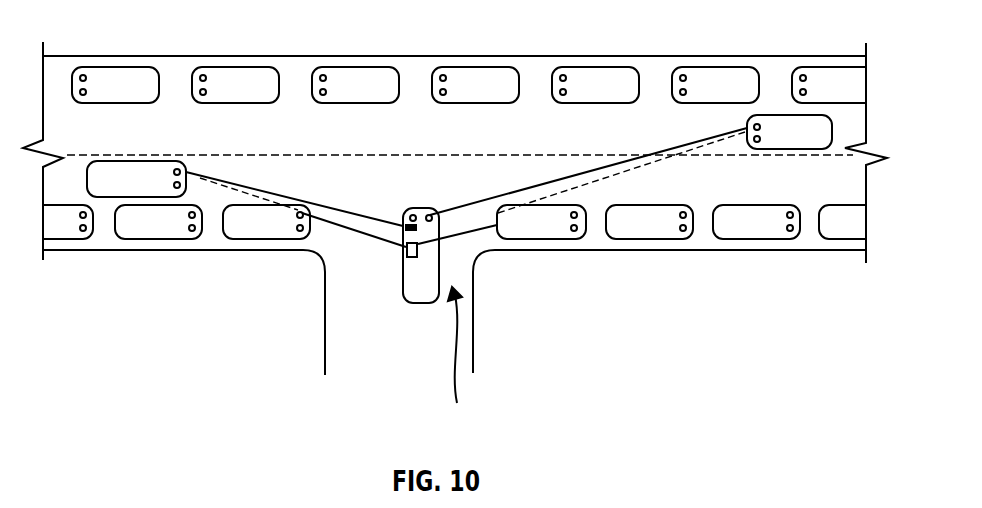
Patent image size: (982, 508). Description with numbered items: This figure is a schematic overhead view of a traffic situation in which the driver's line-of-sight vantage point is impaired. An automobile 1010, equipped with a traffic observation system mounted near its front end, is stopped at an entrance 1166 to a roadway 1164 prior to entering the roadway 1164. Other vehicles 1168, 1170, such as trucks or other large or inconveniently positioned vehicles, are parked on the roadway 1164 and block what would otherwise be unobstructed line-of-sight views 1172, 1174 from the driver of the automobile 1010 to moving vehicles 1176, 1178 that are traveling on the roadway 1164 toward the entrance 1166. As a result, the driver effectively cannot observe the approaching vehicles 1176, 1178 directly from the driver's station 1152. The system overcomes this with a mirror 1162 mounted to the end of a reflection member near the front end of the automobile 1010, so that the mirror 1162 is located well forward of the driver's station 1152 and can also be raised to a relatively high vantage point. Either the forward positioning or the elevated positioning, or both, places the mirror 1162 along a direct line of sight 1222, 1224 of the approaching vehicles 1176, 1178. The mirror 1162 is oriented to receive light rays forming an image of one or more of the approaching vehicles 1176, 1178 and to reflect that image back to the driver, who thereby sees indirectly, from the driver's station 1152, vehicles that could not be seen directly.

The automobile 1010 is at (428, 303).
The driver's station 1152 is at (412, 258).
The mirror 1162 is at (410, 210).
The roadway 1164 is at (538, 56).
The entrance 1166 is at (455, 362).
The other vehicle 1168 is at (240, 239).
The other vehicle 1170 is at (562, 240).
The line-of-sight view 1172 is at (323, 220).
The line-of-sight view 1174 is at (472, 231).
The moving vehicle 1176 is at (110, 198).
The moving vehicle 1178 is at (793, 115).
The direct line of sight 1222 is at (258, 189).
The direct line of sight 1224 is at (623, 163).